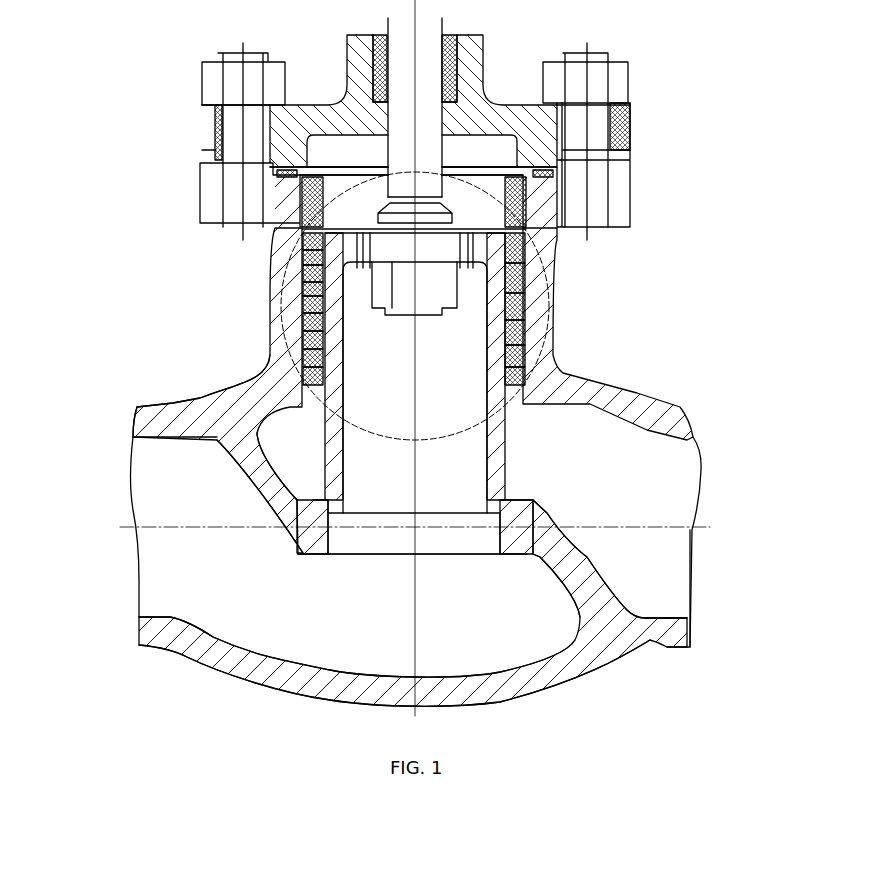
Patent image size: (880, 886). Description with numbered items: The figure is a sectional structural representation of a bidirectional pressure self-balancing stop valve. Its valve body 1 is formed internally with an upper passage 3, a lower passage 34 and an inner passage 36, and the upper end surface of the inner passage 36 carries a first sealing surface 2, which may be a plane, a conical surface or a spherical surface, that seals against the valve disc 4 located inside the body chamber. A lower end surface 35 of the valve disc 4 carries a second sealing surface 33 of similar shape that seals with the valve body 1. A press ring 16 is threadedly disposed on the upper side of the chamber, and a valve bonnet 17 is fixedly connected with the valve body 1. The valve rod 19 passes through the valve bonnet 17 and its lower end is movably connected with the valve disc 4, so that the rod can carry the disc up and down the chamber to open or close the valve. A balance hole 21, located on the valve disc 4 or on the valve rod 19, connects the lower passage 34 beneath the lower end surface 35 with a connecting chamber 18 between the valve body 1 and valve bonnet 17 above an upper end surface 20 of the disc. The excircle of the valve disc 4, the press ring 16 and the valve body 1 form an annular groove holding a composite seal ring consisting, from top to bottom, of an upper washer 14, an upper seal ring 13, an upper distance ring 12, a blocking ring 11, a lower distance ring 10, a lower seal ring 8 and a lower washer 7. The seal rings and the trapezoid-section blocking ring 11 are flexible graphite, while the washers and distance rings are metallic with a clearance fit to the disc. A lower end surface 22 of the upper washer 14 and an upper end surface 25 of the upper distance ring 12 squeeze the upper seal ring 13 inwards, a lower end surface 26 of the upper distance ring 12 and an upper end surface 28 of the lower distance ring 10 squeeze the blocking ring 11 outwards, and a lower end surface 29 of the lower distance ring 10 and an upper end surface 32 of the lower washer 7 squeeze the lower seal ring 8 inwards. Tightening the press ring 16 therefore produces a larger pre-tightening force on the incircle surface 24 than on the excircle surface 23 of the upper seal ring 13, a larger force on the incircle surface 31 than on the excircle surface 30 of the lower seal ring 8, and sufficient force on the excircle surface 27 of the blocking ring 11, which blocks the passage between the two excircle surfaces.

The valve body 1 is at (650, 635).
The first sealing surface 2 is at (568, 540).
The upper passage 3 is at (670, 568).
The valve disc 4 is at (497, 450).
The lower washer 7 is at (522, 380).
The lower seal ring 8 is at (522, 365).
The lower distance ring 10 is at (522, 330).
The blocking ring 11 is at (522, 313).
The upper distance ring 12 is at (522, 298).
The upper seal ring 13 is at (522, 272).
The upper washer 14 is at (522, 230).
The press ring 16 is at (517, 193).
The valve bonnet 17 is at (498, 152).
The connecting chamber 18 is at (623, 130).
The valve rod 19 is at (395, 56).
The upper end surface 20 is at (295, 192).
The balance hole 21 is at (300, 210).
The lower end surface 22 is at (312, 245).
The excircle surface 23 is at (312, 258).
The incircle surface 24 is at (310, 275).
The upper end surface 25 is at (310, 290).
The lower end surface 26 is at (317, 305).
The excircle surface 27 is at (317, 323).
The upper end surface 28 is at (312, 340).
The lower end surface 29 is at (312, 360).
The excircle surface 30 is at (312, 383).
The incircle surface 31 is at (262, 432).
The upper end surface 32 is at (275, 465).
The second sealing surface 33 is at (380, 513).
The lower passage 34 is at (300, 555).
The lower end surface 35 is at (320, 580).
The inner passage 36 is at (378, 540).